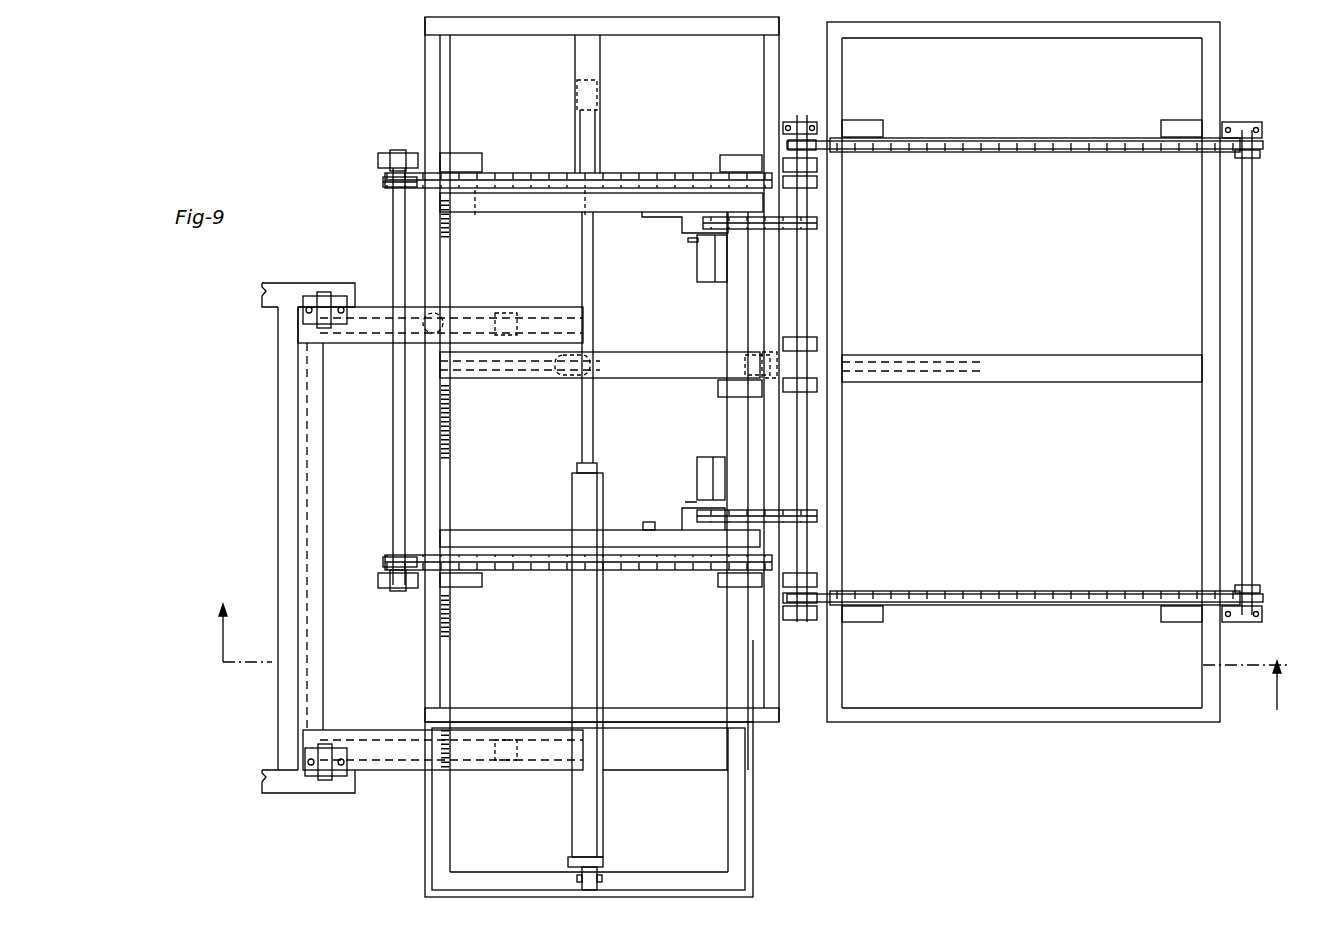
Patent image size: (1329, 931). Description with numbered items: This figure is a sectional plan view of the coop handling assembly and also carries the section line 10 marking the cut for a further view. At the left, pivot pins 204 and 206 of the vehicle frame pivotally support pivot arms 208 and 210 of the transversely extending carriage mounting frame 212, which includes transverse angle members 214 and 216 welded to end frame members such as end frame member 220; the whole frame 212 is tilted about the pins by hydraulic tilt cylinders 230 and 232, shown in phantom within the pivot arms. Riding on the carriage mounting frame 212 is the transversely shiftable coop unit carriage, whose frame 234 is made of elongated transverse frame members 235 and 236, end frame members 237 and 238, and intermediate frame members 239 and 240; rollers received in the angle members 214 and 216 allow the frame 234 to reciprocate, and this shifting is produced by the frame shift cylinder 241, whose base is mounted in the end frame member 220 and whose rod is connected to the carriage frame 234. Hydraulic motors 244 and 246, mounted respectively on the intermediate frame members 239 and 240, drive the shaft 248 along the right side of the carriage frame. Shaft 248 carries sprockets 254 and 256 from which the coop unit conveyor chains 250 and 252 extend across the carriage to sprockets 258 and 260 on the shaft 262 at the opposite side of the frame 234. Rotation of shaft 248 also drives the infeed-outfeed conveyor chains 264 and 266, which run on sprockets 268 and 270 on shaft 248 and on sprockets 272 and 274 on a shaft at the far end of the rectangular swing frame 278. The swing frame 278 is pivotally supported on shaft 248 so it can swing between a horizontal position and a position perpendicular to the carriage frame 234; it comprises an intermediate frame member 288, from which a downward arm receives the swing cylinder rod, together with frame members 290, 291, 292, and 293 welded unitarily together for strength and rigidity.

The section line 10- 10 is at (731, 675).
The pivot pin 204 is at (322, 292).
The pivot pin 206 is at (322, 793).
The pivot arm 208 is at (345, 343).
The pivot arm 210 is at (393, 730).
The carriage mounting frame 212 is at (408, 868).
The transverse angle member 214 is at (450, 825).
The transverse angle member 216 is at (728, 825).
The end frame member 220 is at (512, 882).
The hydraulic tilt cylinder 230 is at (382, 770).
The hydraulic tilt cylinder 232 is at (440, 312).
The conveyor carriage frame 234 is at (408, 622).
The elongated transverse frame member 235 is at (425, 668).
The elongated transverse frame member 236 is at (780, 715).
The end frame member 237 is at (525, 30).
The end frame member 238 is at (636, 708).
The intermediate frame member 239 is at (500, 212).
The intermediate frame member 240 is at (525, 530).
The frame shift cylinder 241 is at (603, 632).
The hydraulic motor 244 is at (697, 265).
The hydraulic motor 246 is at (697, 470).
The shaft 248 is at (807, 466).
The coop unit conveyor chain 250 is at (505, 178).
The coop unit conveyor chain 252 is at (515, 571).
The sprocket 254 is at (808, 170).
The sprocket 256 is at (817, 516).
The sprocket 258 is at (392, 192).
The sprocket 260 is at (388, 556).
The shaft 262 is at (393, 447).
The infeed-outfeed conveyor chain 264 is at (985, 140).
The infeed-outfeed conveyor chain 266 is at (985, 592).
The sprocket 268 is at (800, 122).
The sprocket 270 is at (820, 590).
The sprocket 272 is at (1260, 150).
The sprocket 274 is at (1260, 594).
The rectangular swing frame 278 is at (1000, 740).
The intermediate frame member 288 is at (1045, 382).
The frame member 290 is at (842, 285).
The frame member 291 is at (1202, 285).
The frame member 292 is at (1055, 32).
The frame member 293 is at (936, 708).